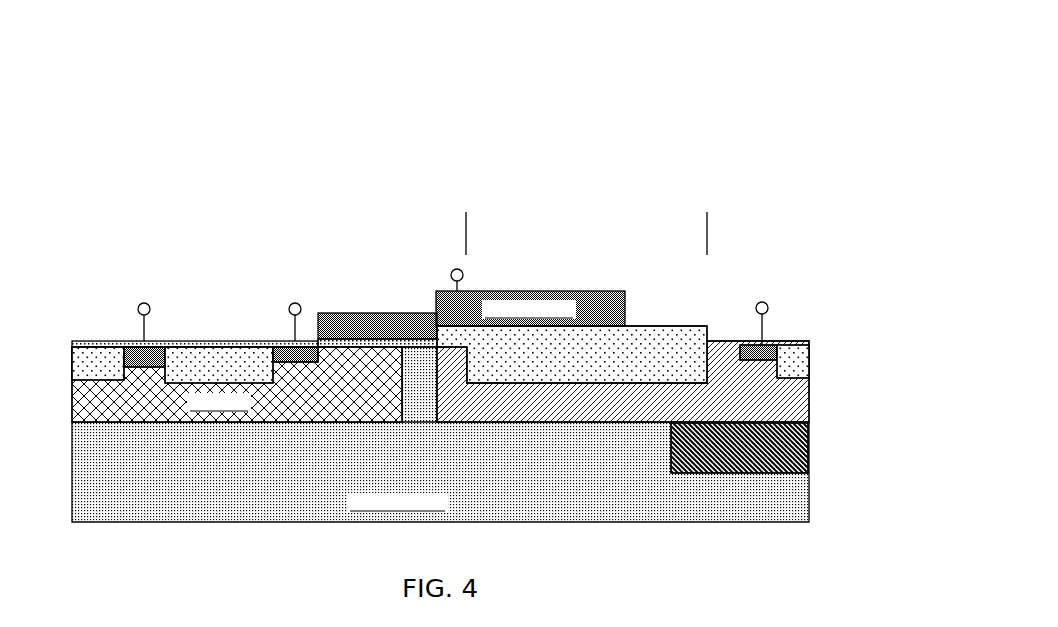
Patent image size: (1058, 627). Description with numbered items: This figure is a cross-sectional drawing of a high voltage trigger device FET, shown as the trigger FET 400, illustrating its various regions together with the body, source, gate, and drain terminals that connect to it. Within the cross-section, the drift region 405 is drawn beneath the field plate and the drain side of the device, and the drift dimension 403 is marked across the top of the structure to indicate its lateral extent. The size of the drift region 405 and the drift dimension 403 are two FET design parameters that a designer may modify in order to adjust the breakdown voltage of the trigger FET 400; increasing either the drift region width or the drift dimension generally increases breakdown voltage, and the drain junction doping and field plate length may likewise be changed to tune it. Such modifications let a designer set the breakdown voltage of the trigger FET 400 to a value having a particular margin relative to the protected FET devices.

The trigger FET 400 is at (204, 165).
The drift dimension 403 is at (707, 233).
The drift region 405 is at (511, 411).